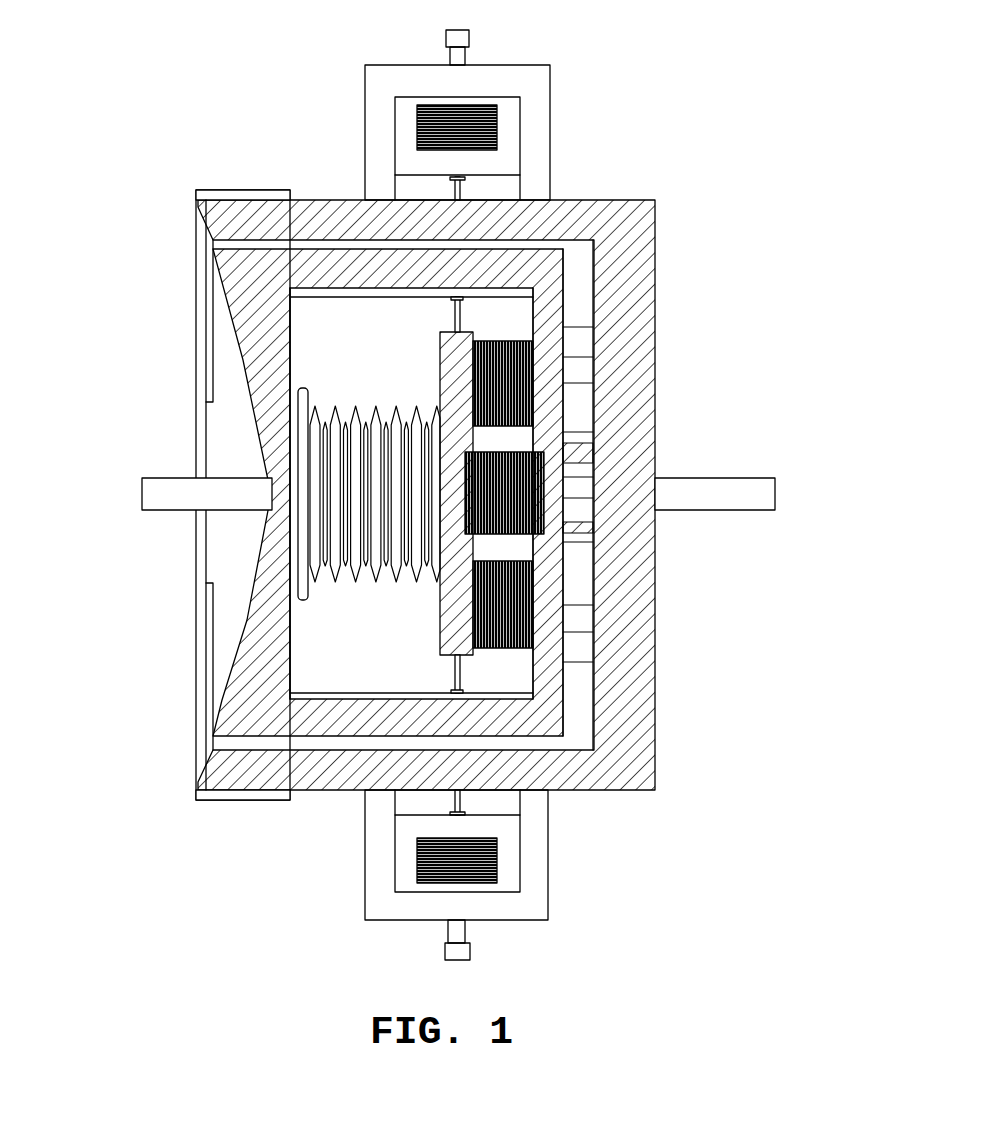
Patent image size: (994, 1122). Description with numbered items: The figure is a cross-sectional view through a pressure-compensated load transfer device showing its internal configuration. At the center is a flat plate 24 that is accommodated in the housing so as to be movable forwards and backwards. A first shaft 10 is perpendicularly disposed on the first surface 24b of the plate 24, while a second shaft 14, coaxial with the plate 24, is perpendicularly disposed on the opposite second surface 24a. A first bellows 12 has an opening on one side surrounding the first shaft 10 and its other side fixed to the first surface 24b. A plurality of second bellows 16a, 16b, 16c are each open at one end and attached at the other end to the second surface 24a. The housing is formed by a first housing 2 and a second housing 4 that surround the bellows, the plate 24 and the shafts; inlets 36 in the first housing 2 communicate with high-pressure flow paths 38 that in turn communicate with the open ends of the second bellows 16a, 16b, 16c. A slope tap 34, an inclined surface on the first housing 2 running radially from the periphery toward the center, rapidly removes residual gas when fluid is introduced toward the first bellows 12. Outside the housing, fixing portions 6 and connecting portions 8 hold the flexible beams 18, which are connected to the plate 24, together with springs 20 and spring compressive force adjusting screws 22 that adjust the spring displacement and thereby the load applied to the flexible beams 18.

The first housing 2 is at (233, 783).
The second housing 4 is at (657, 726).
The fixing portion 6 is at (370, 80).
The connecting portion 8 is at (403, 162).
The first shaft 10 is at (142, 491).
The first bellows 12 is at (330, 573).
The second shaft 14 is at (765, 495).
The second bellows 16a is at (536, 613).
The second bellows 16b is at (545, 463).
The second bellows 16c is at (563, 402).
The flexible beam 18 is at (467, 185).
The spring 20 is at (497, 127).
The spring compressive force adjusting screw 22 is at (470, 48).
The plate 24 is at (429, 491).
The second surface 24a is at (475, 338).
The first surface 24b is at (440, 350).
The slope tap 34 is at (245, 627).
The inlet 36 is at (205, 303).
The high-pressure flow path 38 is at (573, 737).